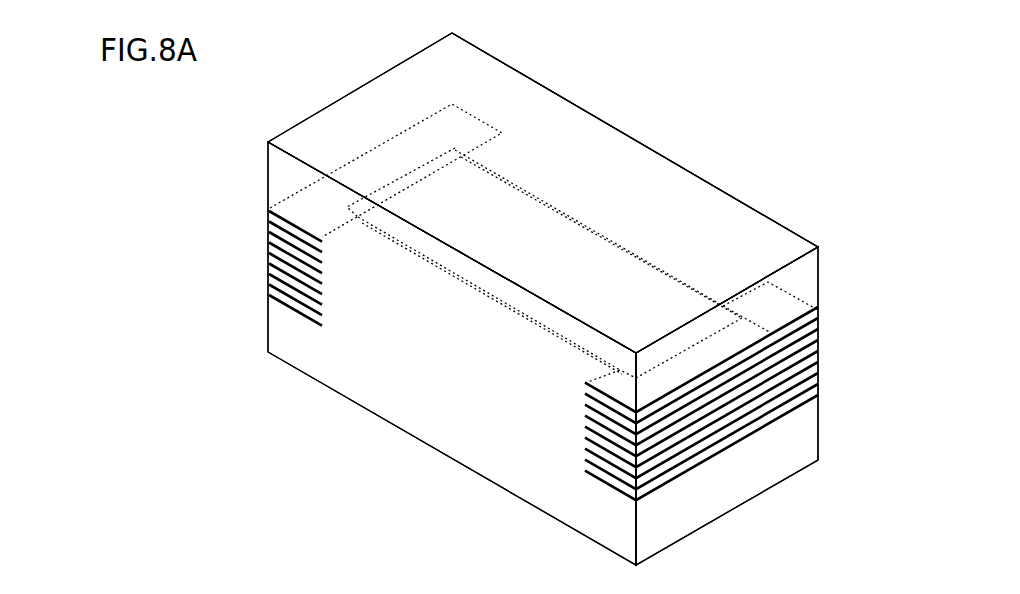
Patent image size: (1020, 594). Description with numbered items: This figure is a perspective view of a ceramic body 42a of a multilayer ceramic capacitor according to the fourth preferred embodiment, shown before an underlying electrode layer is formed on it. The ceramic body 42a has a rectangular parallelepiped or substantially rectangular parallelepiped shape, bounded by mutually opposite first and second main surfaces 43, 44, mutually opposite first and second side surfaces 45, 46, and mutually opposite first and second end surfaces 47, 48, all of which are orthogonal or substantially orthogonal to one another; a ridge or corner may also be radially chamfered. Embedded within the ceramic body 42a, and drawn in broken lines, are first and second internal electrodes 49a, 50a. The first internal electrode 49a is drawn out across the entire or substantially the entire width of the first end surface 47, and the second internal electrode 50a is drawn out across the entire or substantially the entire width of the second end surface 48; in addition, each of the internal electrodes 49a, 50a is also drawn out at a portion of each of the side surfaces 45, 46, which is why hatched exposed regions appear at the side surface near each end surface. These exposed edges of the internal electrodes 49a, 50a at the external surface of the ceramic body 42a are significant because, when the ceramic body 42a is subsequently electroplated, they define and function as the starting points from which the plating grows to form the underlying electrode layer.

The ceramic body 42a is at (658, 144).
The first main surface 43 is at (590, 130).
The second main surface 44 is at (415, 405).
The first side surface 45 is at (712, 205).
The second side surface 46 is at (365, 380).
The first end surface 47 is at (366, 104).
The second end surface 48 is at (732, 500).
The first internal electrode 49a is at (268, 210).
The second internal electrode 50a is at (818, 318).